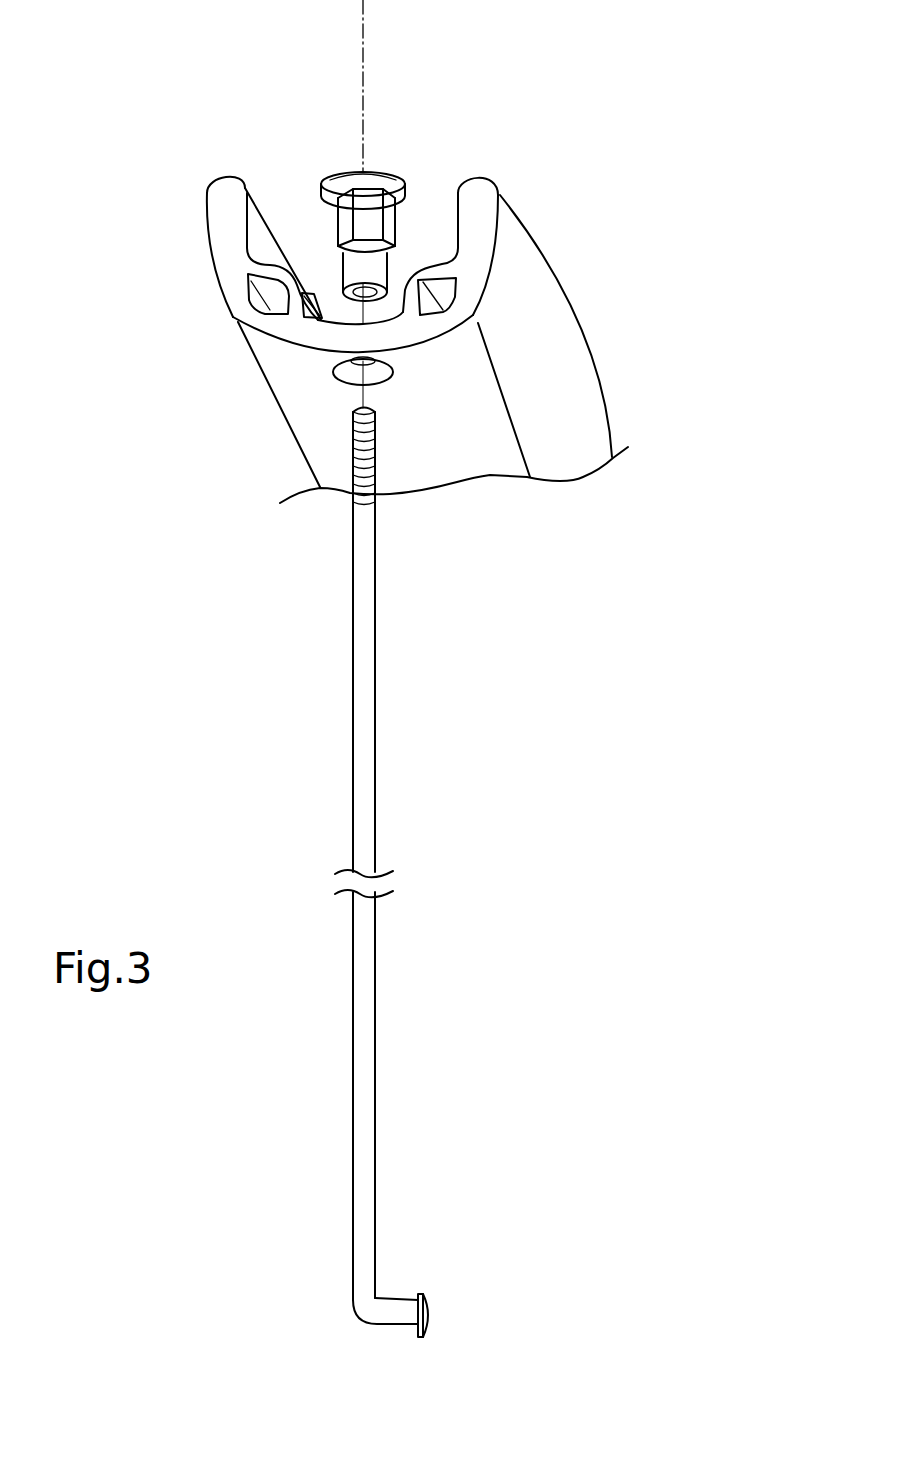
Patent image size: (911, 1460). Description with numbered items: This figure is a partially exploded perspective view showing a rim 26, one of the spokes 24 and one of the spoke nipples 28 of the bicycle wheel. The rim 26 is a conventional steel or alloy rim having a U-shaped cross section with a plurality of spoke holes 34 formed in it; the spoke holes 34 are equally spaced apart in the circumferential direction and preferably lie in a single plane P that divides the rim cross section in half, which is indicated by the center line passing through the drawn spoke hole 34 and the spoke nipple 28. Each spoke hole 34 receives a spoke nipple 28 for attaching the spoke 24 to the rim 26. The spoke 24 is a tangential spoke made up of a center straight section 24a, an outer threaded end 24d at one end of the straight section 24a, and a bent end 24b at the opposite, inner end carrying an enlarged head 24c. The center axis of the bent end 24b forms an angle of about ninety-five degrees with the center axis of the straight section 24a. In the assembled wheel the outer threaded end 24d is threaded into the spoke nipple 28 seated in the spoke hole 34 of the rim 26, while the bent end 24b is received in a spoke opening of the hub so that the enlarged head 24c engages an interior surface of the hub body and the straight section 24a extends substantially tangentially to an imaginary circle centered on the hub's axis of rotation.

The plane P is at (365, 68).
The rim 26 is at (558, 277).
The spoke nipple 28 is at (380, 170).
The spoke hole 34 is at (378, 375).
The spoke 24 is at (449, 873).
The straight section 24a is at (377, 713).
The bent end 24b is at (385, 1298).
The enlarged head 24c is at (432, 1315).
The outer threaded end 24d is at (378, 457).